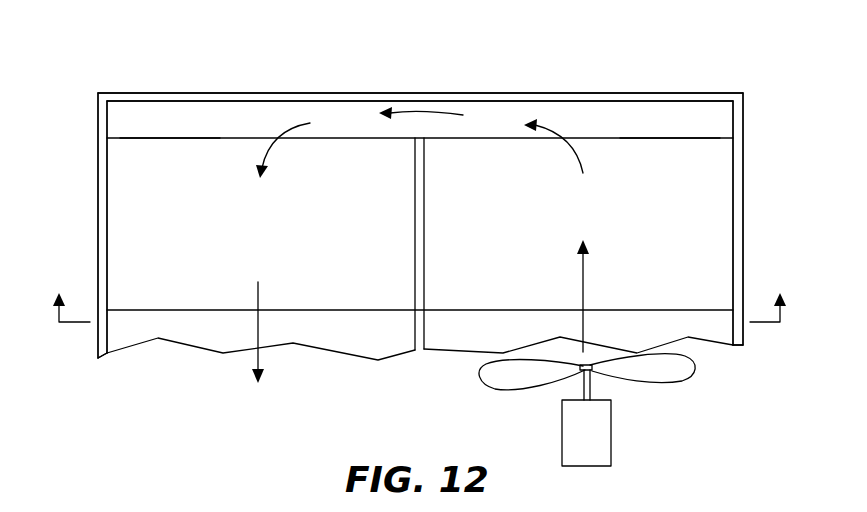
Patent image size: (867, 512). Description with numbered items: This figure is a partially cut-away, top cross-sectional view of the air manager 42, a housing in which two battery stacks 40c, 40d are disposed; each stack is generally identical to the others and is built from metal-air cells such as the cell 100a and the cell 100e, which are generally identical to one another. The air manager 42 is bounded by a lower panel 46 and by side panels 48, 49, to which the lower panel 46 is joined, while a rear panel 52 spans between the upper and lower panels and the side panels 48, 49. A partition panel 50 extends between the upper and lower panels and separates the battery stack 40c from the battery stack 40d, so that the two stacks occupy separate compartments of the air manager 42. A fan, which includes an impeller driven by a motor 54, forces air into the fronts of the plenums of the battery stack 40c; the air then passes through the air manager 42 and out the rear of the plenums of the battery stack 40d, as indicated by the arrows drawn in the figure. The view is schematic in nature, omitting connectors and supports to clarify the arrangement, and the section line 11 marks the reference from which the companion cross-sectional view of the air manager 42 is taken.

The air manager 42 is at (320, 74).
The battery stack 40d is at (168, 139).
The battery stack 40c is at (666, 139).
The rear panel 52 is at (483, 96).
The side panel 48 is at (98, 222).
The side panel 49 is at (743, 222).
The lower panel 46 is at (343, 345).
The partition panel 50 is at (415, 336).
The motor 54 is at (611, 445).
The metal-air cell 100e is at (160, 238).
The metal-air cell 100a is at (493, 238).
The line 11— 11 is at (420, 297).